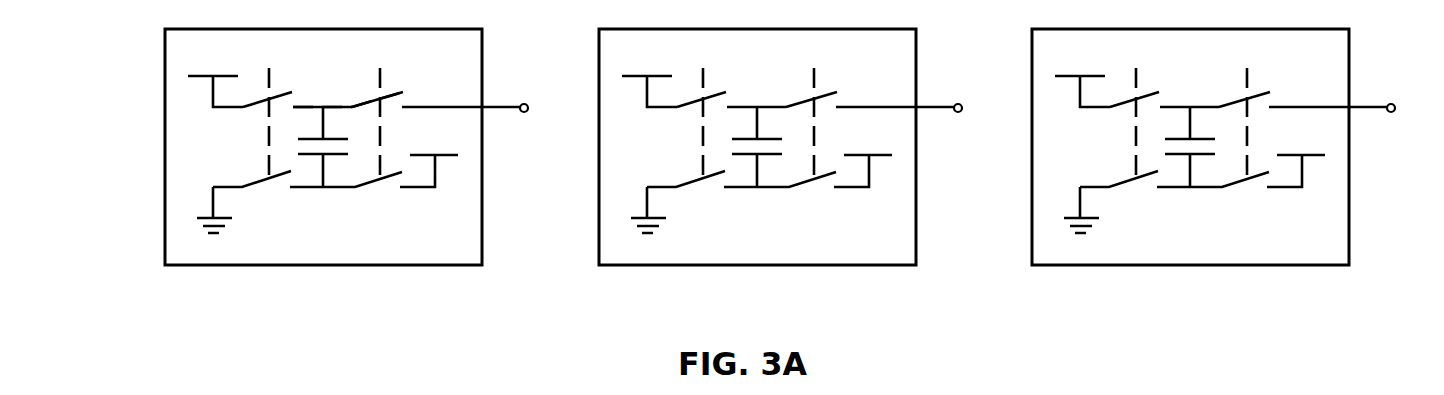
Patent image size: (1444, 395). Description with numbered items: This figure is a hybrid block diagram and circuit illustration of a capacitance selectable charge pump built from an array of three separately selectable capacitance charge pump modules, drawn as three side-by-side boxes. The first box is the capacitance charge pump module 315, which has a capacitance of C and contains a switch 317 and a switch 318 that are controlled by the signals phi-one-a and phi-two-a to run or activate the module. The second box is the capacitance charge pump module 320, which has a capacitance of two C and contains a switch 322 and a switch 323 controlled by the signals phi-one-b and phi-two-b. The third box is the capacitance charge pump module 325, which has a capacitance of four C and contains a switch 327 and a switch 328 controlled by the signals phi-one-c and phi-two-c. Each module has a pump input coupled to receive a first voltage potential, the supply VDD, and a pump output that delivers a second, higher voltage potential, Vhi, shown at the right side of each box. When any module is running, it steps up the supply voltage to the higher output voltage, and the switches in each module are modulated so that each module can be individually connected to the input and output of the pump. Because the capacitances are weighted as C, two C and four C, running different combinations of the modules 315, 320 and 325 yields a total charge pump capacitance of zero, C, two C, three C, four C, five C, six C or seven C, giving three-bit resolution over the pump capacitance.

The capacitance charge pump module 315 is at (203, 265).
The switch 317 is at (277, 86).
The switch 318 is at (388, 86).
The capacitance charge pump module 320 is at (784, 177).
The switch 322 is at (735, 107).
The switch 323 is at (830, 107).
The capacitance charge pump module 325 is at (1217, 177).
The switch 327 is at (1168, 107).
The switch 328 is at (1263, 107).